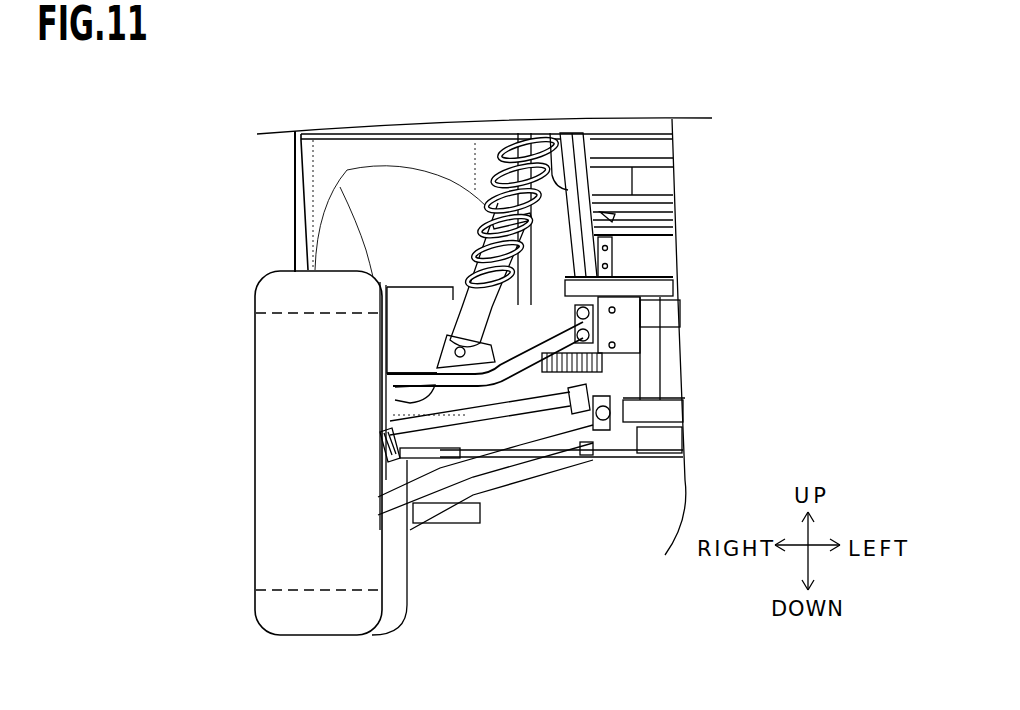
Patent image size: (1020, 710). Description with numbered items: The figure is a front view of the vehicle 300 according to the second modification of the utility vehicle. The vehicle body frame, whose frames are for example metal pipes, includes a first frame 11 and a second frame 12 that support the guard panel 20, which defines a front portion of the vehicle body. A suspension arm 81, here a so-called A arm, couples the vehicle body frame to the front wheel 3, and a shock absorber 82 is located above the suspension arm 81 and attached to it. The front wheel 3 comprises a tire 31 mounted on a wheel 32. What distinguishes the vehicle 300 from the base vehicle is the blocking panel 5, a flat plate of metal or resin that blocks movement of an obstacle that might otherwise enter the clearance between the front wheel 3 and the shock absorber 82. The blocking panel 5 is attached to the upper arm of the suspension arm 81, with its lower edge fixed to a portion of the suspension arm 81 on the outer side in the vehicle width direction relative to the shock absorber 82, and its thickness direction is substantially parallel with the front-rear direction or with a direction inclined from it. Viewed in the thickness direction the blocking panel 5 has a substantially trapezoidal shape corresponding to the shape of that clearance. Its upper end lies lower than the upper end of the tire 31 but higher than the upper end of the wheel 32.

The vehicle 300 is at (645, 118).
The guard panel 20 is at (297, 172).
The first frame 11 is at (295, 210).
The tire 31 is at (268, 272).
The wheel 32 is at (282, 316).
The front wheel 3 is at (287, 426).
The blocking panel 5 is at (378, 342).
The second frame 12 is at (565, 290).
The suspension arm 81 is at (490, 383).
The shock absorber 82 is at (490, 315).